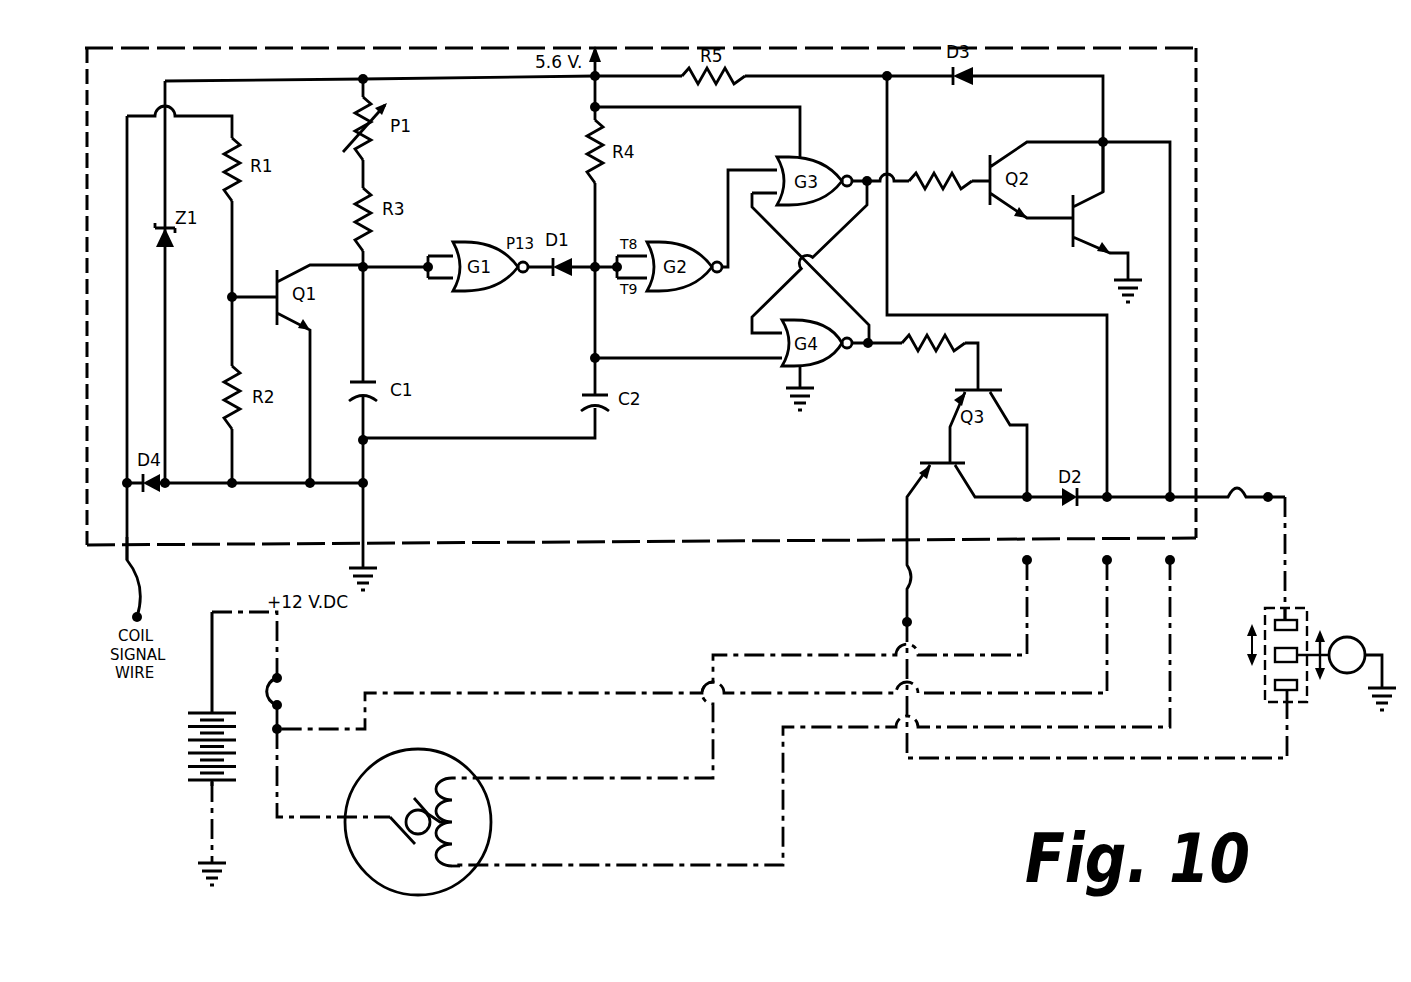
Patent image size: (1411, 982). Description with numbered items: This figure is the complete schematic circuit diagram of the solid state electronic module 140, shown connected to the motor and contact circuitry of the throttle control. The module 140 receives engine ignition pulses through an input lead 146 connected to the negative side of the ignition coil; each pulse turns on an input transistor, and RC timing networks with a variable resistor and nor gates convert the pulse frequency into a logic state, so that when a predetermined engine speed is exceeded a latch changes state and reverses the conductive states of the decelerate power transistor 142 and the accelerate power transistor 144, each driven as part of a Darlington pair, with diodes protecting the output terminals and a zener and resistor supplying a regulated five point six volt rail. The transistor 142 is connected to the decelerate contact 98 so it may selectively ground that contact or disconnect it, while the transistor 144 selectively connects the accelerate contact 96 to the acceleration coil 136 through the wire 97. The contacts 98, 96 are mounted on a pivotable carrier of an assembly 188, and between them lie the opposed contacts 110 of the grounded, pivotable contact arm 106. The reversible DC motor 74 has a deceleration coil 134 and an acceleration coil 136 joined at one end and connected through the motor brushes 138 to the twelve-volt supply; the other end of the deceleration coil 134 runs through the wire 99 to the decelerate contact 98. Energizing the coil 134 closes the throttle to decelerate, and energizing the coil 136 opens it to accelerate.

The electronic module 140 is at (1196, 213).
The decelerate power transistor 142 is at (1107, 222).
The accelerate power transistor 144 is at (984, 542).
The input lead 146 is at (127, 555).
The reversible DC motor 74 is at (393, 893).
The deceleration coil 134 is at (452, 790).
The acceleration coil 136 is at (440, 852).
The motor brushes 138 is at (348, 845).
The accelerate contact 96 is at (1275, 686).
The wire 97 is at (1097, 690).
The decelerate contact 98 is at (1275, 622).
The wire 99 is at (1300, 558).
The contact arm 106 is at (1333, 645).
The opposed contacts 110 is at (1272, 660).
The relay 188 is at (1278, 664).